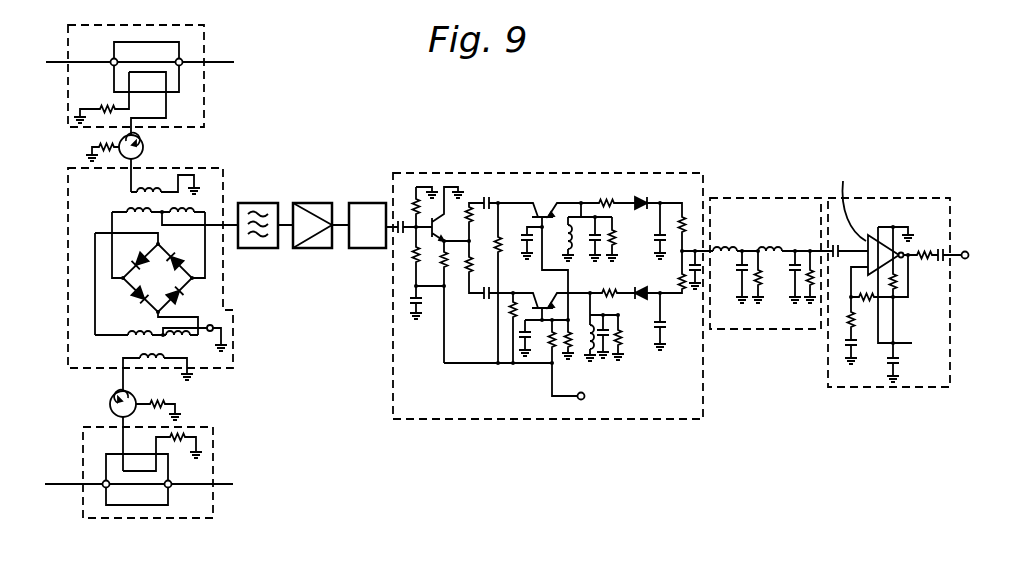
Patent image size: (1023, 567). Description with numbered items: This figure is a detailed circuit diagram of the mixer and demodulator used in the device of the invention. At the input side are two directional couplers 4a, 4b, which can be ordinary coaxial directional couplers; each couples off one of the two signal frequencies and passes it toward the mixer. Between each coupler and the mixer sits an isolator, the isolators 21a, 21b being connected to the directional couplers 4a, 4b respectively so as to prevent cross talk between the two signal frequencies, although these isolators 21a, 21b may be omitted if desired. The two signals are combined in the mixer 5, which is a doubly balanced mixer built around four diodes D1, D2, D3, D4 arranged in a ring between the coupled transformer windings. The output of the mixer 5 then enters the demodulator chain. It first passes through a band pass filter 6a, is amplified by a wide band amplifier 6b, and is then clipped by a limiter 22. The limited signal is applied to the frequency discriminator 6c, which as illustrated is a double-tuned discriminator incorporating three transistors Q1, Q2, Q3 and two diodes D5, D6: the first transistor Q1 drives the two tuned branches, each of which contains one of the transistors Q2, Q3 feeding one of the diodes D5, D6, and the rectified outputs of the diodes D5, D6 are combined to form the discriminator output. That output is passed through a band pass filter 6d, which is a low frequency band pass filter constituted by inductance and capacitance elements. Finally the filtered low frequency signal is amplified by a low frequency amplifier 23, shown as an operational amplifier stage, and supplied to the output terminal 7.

The directional coupler 4a is at (204, 108).
The isolator 21a is at (143, 147).
The mixer 5 is at (196, 280).
The diode D1 is at (131, 254).
The diode D2 is at (188, 256).
The diode D3 is at (191, 301).
The diode D4 is at (130, 303).
The band pass filter 6a is at (258, 203).
The wide band amplifier 6b is at (313, 203).
The limiter 22 is at (368, 203).
The frequency discriminator 6c is at (549, 336).
The transistor Q1 is at (445, 275).
The transistor Q2 is at (540, 250).
The transistor Q3 is at (552, 316).
The diode D5 is at (628, 193).
The diode D6 is at (627, 281).
The band pass filter 6d is at (760, 330).
The low frequency amplifier 23 is at (897, 196).
The terminal 7 is at (976, 267).
The isolator 21b is at (110, 404).
The directional coupler 4b is at (213, 455).